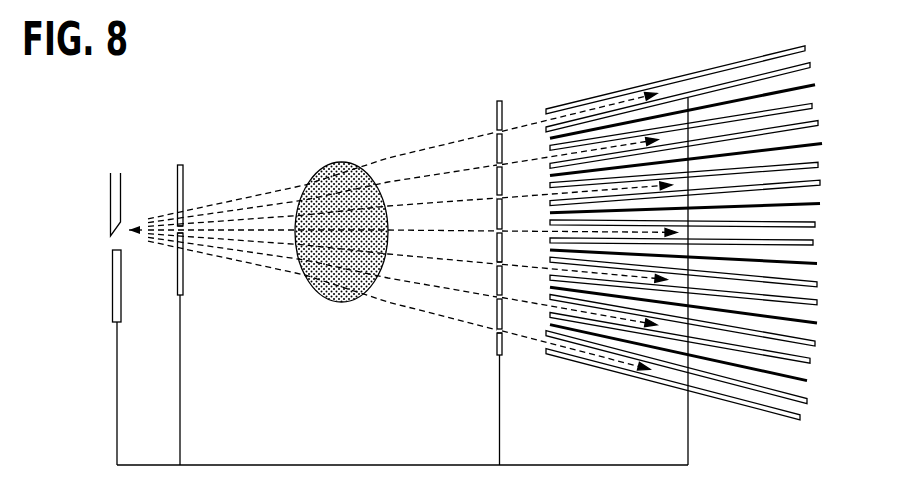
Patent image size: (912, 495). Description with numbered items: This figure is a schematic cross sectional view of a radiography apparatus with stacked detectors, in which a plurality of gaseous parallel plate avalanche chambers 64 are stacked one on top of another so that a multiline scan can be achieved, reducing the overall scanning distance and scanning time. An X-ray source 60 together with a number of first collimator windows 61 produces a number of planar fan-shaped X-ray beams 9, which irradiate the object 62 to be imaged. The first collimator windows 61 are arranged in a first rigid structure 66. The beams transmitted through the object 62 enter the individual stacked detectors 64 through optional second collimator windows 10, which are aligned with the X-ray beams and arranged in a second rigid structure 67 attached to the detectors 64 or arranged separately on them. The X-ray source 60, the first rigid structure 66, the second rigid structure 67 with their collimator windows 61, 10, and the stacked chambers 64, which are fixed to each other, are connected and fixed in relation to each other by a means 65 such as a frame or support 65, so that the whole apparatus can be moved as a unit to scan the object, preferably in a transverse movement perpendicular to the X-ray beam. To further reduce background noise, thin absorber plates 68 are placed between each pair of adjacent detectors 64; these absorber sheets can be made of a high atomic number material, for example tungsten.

The planar fan-shaped X-ray beams 9 is at (398, 202).
The second collimator windows 10 is at (495, 272).
The X-ray source 60 is at (108, 226).
The collimator windows 61 is at (188, 228).
The object 62 is at (337, 301).
The gaseous parallel plate avalanche chambers 64 is at (705, 234).
The frame or support 65 is at (402, 281).
The first rigid structure 66 is at (180, 163).
The second rigid structure 67 is at (498, 99).
The absorber plates 68 is at (817, 88).